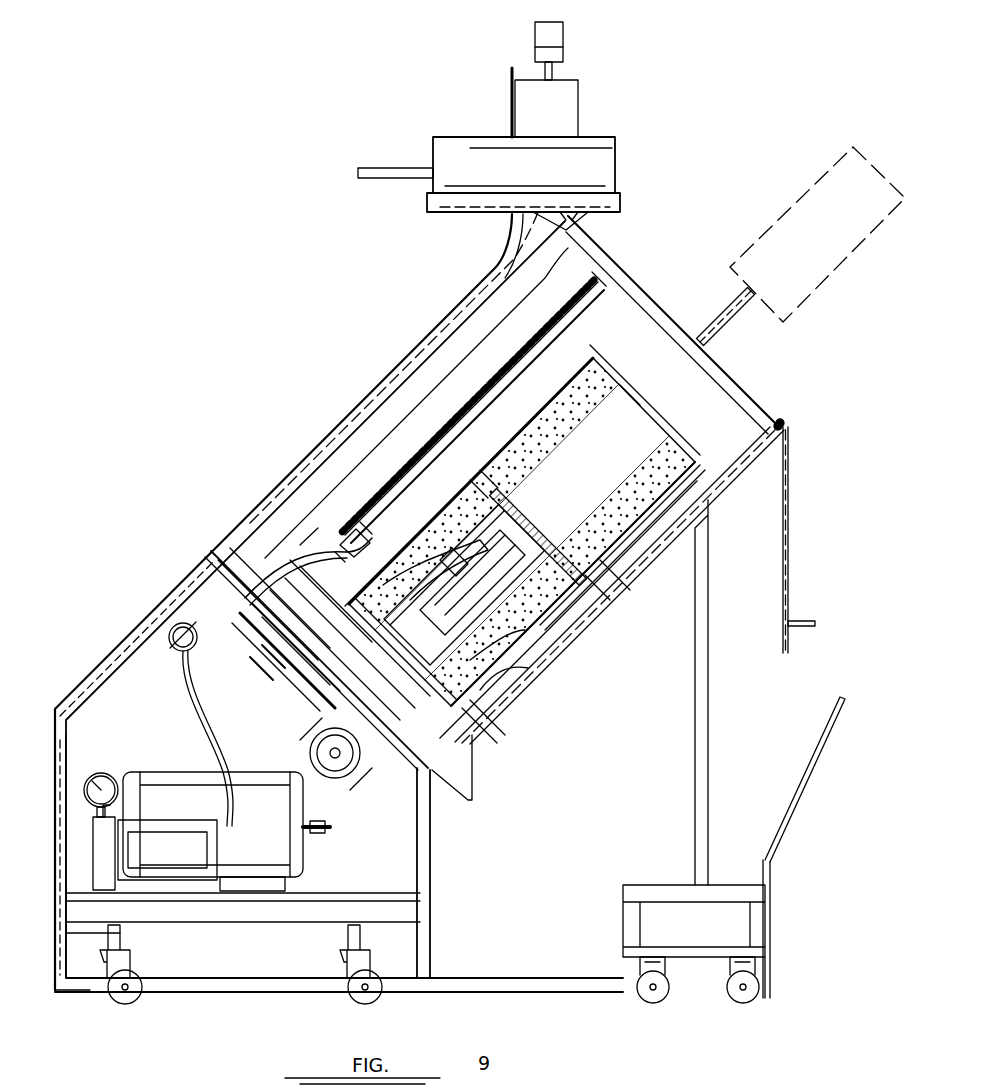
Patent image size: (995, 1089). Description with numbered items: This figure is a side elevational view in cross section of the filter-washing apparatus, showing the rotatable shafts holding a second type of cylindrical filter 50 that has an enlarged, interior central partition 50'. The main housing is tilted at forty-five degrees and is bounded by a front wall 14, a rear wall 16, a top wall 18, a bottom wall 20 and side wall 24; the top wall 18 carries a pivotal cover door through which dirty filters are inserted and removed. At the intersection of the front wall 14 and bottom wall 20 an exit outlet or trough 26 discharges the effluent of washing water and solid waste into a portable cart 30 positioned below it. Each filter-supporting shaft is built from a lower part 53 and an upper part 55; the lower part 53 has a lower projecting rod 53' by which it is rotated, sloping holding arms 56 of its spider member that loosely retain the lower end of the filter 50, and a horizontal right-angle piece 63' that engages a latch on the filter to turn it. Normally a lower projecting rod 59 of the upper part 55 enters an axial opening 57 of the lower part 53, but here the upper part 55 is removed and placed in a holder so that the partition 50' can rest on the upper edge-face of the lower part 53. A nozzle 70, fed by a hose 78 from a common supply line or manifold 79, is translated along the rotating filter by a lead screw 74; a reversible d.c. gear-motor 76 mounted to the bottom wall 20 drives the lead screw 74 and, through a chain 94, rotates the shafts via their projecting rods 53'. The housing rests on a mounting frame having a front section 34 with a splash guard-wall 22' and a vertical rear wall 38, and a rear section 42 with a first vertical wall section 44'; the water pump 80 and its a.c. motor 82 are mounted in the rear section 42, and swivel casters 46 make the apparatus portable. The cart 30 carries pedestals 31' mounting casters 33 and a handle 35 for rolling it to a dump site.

The rear wall 16 is at (433, 350).
The lead screw 74 is at (530, 350).
The side wall 24 is at (622, 338).
The cylindrical filter 50 is at (522, 525).
The upper part of shaft 55 is at (787, 218).
The lower projecting rod of upper section 59 is at (727, 320).
The interior central partition 50' is at (565, 485).
The horizontal right-angle piece 63' is at (394, 386).
The hose 78 is at (295, 560).
The nozzle 70 is at (350, 540).
The sloping holding arm 56 is at (390, 578).
The axial opening 57 is at (582, 603).
The lower part of shaft 53 is at (494, 596).
The lower projecting rod 53' is at (488, 733).
The front wall 14 is at (758, 456).
The top wall 18 is at (788, 518).
The common supply line or manifold 79 is at (176, 628).
The first vertical wall section 44' is at (47, 830).
The bottom wall 20 is at (275, 652).
The chain 94 is at (296, 674).
The reversible d.c. gear-motor 76 is at (328, 778).
The exit outlet or trough 26 is at (463, 800).
The side panel or splash guard-wall 22' is at (568, 644).
The front section of mounting frame 34 is at (720, 724).
The handle 35 is at (817, 762).
The portable cart or wagon 30 is at (812, 857).
The pedestal or brace 31' is at (725, 976).
The caster 33 is at (668, 1000).
The rear section of mounting frame 42 is at (52, 974).
The swivel caster 46 is at (128, 1000).
The a.c. motor 82 is at (182, 810).
The water pump 80 is at (175, 861).
The vertical rear wall of front section 38 is at (428, 922).